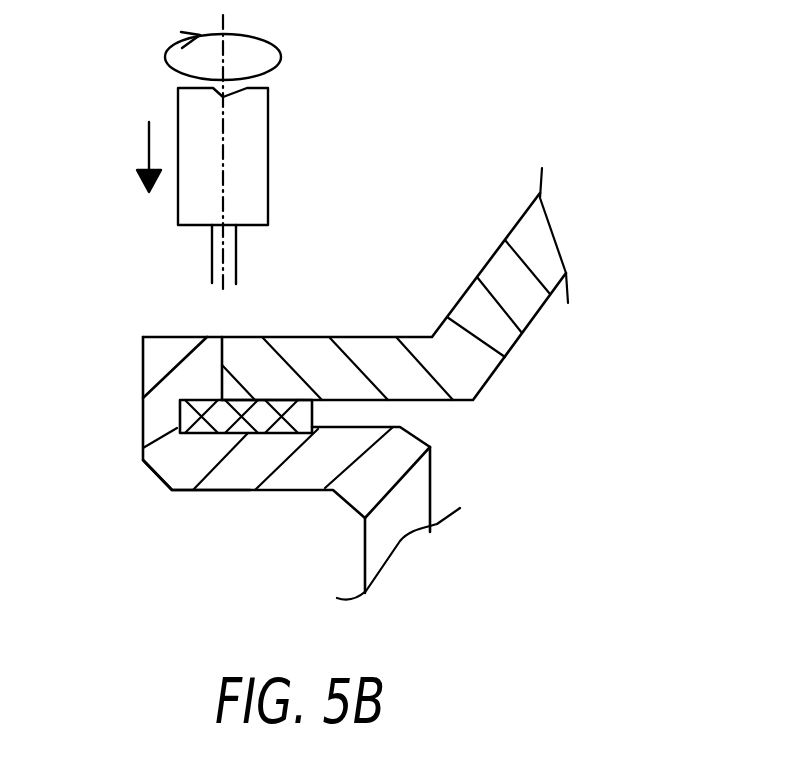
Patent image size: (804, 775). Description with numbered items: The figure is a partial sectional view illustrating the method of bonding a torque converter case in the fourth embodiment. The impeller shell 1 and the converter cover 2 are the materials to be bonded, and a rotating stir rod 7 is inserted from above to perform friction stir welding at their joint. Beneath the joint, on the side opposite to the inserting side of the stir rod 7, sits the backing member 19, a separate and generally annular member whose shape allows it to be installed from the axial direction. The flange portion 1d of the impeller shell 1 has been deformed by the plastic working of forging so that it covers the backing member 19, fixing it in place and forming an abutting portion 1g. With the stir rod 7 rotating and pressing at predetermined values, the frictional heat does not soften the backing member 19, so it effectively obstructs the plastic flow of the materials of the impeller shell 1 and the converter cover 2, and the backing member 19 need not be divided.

The stir rod 7 is at (257, 180).
The converter cover 2 is at (478, 362).
The abutting portion 1g is at (197, 365).
The backing member 19 is at (180, 426).
The impeller shell 1 is at (234, 489).
The flange portion 1d is at (192, 467).